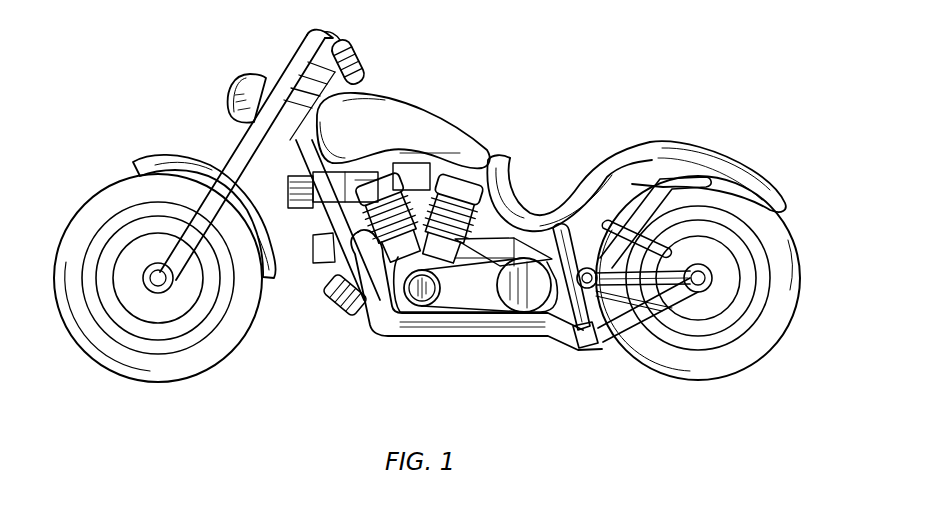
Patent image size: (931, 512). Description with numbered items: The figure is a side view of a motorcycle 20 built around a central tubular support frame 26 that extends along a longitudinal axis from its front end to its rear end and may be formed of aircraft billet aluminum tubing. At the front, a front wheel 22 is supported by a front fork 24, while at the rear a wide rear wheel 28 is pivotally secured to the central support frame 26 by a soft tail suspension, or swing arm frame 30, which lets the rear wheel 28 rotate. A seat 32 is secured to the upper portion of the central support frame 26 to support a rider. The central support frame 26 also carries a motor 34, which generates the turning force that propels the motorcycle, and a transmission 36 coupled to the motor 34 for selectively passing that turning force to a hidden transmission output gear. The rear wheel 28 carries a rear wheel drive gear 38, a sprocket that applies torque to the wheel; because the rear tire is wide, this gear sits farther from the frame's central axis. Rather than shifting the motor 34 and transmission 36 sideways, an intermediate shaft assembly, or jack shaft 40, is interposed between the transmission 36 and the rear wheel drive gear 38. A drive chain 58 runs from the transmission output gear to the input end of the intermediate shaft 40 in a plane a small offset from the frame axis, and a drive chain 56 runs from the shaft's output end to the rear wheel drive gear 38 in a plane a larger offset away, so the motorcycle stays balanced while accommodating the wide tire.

The motorcycle 20 is at (586, 84).
The front wheel 22 is at (84, 218).
The front fork 24 is at (232, 150).
The central tubular support frame 26 is at (378, 334).
The rear wheel 28 is at (796, 292).
The swing arm frame 30 is at (606, 346).
The seat 32 is at (584, 188).
The motor 34 is at (419, 306).
The transmission 36 is at (521, 312).
The rear wheel drive gear 38 is at (726, 257).
The intermediate shaft assembly 40 is at (582, 320).
The drive chain 56 is at (668, 246).
The drive chain 58 is at (546, 330).